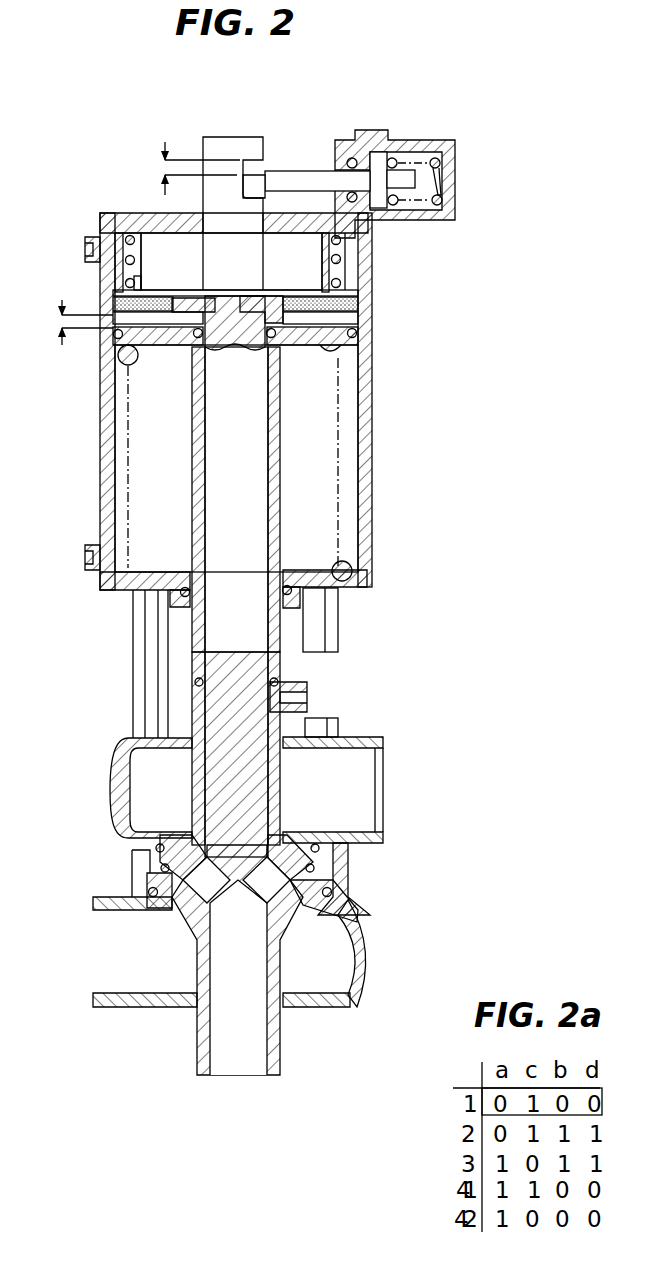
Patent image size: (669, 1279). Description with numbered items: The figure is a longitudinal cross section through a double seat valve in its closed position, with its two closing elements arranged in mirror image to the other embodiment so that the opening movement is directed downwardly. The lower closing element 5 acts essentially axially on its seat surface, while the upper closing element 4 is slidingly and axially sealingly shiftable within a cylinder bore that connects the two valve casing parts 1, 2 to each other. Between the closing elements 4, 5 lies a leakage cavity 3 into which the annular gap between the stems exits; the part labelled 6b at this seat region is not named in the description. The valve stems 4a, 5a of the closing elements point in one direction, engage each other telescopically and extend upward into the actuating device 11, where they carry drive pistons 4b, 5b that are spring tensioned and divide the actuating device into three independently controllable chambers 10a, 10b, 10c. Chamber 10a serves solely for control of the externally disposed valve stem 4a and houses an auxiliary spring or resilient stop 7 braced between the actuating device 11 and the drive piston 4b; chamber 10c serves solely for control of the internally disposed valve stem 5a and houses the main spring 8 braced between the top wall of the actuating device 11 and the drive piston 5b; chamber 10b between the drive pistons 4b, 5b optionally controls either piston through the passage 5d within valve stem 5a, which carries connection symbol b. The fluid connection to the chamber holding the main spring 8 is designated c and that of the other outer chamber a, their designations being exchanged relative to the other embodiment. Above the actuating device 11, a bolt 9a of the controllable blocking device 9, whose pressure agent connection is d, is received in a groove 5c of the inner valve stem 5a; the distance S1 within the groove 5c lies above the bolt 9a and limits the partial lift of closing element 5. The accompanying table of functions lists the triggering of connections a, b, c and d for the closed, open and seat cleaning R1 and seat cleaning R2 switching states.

The actuating device 11 is at (72, 198).
The fluid connection a is at (90, 246).
The fluid connection c is at (80, 557).
The connection symbol b is at (237, 136).
The pressure agent connection d is at (375, 131).
The controllable blocking device 9 is at (472, 122).
The bolt 9a is at (299, 175).
The groove 5c is at (265, 190).
The partial lift movement S1 is at (140, 243).
The auxiliary spring or resilient stop 7 is at (125, 257).
The chamber 10a is at (190, 282).
The drive piston 5b is at (112, 300).
The passage 5d is at (233, 297).
The drive piston 4b is at (127, 344).
The chamber 10b is at (150, 326).
The main spring 8 is at (128, 473).
The chamber 10c is at (140, 522).
The seat cleaning R1 is at (317, 693).
The valve stem 5a is at (210, 757).
The valve stem 4a is at (197, 802).
The closing element 4 is at (177, 840).
The valve casing part 1 is at (364, 778).
The seat cleaning R2 is at (327, 788).
The leakage cavity 3 is at (157, 877).
The seal ring 6b is at (147, 892).
The closing element 5 is at (180, 902).
The valve casing part 2 is at (128, 963).